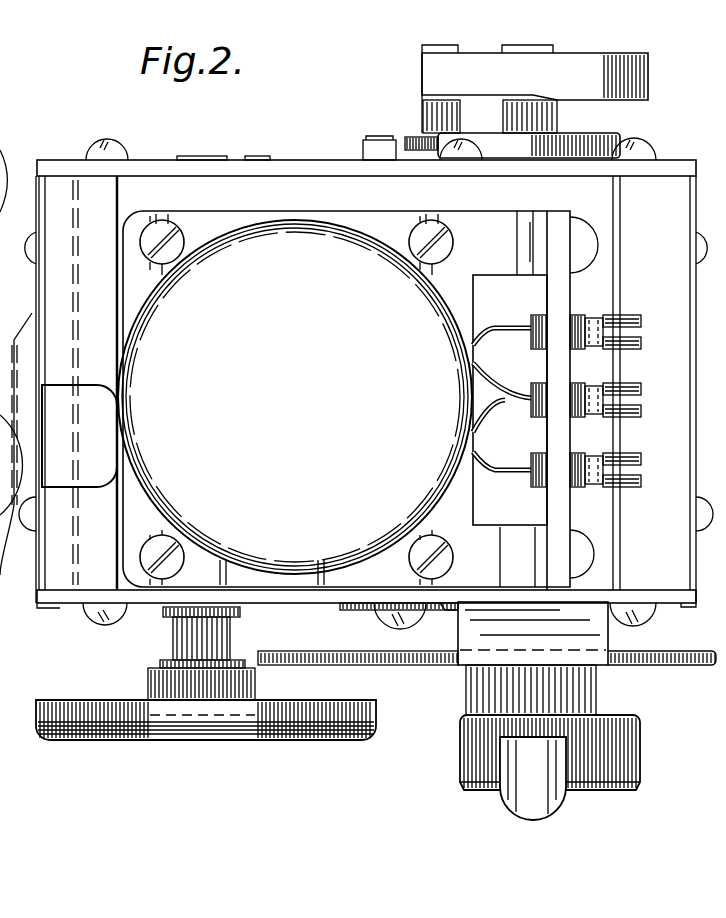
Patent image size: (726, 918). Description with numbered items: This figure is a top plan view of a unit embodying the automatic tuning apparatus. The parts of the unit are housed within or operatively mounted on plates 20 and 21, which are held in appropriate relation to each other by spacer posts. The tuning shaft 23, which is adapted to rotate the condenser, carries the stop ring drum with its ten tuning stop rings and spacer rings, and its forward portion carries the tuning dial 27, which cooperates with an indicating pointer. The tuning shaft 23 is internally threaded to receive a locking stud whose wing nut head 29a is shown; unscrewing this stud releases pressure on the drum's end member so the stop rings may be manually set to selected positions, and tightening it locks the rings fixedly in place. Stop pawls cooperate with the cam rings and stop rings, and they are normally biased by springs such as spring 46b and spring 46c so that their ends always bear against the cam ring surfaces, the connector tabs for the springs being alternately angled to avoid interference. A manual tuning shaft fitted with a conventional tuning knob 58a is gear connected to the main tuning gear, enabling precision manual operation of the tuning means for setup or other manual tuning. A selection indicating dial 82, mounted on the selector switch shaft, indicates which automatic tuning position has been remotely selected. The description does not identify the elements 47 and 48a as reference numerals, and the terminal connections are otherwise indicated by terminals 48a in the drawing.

The plate 20 is at (293, 168).
The plate 21 is at (665, 603).
The tuning shaft 23 is at (523, 132).
The tuning dial 27 is at (395, 660).
The wing nut head 29a is at (530, 793).
The spring 46b is at (638, 388).
The spring 46c is at (636, 315).
The dial 47 is at (285, 357).
The terminal 48a is at (641, 458).
The tuning knob 58a is at (636, 735).
The selection indicating dial 82 is at (143, 743).